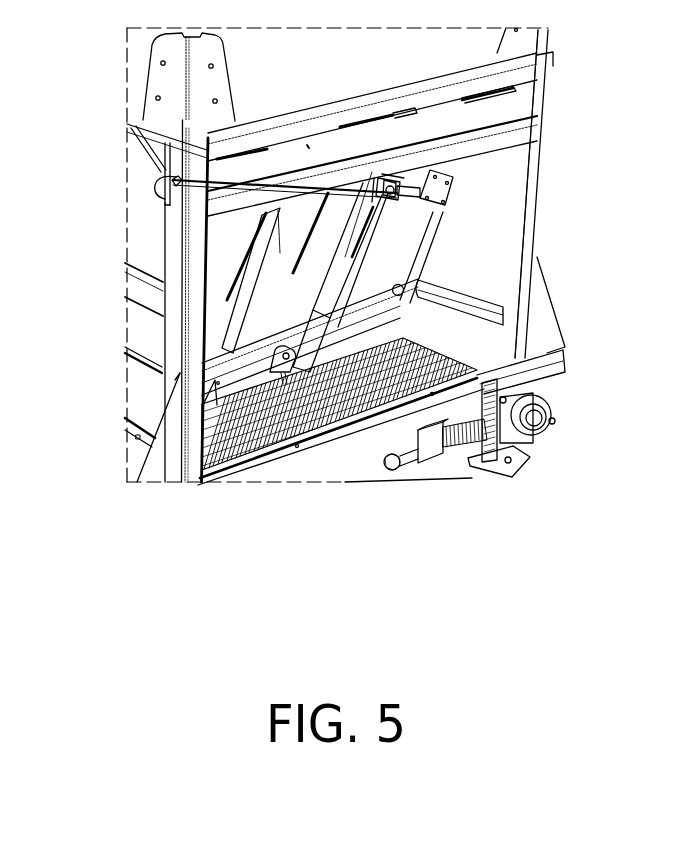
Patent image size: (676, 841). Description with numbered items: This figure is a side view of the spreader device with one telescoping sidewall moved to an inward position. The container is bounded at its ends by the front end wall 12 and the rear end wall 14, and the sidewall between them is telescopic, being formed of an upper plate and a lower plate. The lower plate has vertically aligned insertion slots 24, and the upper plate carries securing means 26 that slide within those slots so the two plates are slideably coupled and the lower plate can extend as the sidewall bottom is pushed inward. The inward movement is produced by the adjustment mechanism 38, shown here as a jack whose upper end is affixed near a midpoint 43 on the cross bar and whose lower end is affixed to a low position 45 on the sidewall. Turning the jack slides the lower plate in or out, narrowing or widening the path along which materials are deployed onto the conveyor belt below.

The front end wall 12 is at (140, 340).
The rear end wall 14 is at (493, 217).
The insertion slots 24 is at (232, 291).
The securing means 26 is at (263, 212).
The adjustment mechanism 38 is at (432, 258).
The midpoint 43 is at (406, 190).
The low position 45 is at (285, 356).